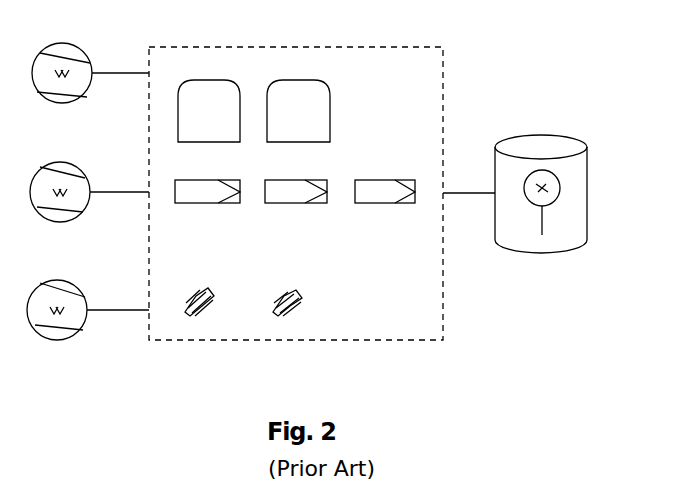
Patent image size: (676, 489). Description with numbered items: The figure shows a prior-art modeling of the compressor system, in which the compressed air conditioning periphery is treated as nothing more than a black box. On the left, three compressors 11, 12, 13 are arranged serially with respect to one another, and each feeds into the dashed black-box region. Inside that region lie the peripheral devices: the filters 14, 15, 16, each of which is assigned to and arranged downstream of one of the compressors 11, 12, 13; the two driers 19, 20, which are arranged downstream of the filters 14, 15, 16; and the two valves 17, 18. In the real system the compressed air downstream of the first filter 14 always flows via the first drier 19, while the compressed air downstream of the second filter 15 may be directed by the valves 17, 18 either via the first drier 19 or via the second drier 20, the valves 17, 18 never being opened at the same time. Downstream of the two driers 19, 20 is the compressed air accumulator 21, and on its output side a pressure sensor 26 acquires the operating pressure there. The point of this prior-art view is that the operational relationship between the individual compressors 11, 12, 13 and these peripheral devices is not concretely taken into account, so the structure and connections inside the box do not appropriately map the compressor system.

The compressor 11 is at (68, 98).
The compressor 12 is at (70, 210).
The compressor 13 is at (70, 330).
The filter 14 is at (205, 203).
The filter 15 is at (290, 203).
The filter 16 is at (378, 203).
The valve 17 is at (212, 290).
The valve 18 is at (302, 300).
The drier 19 is at (224, 83).
The drier 20 is at (318, 82).
The compressed air accumulator 21 is at (512, 243).
The pressure sensor 26 is at (557, 181).